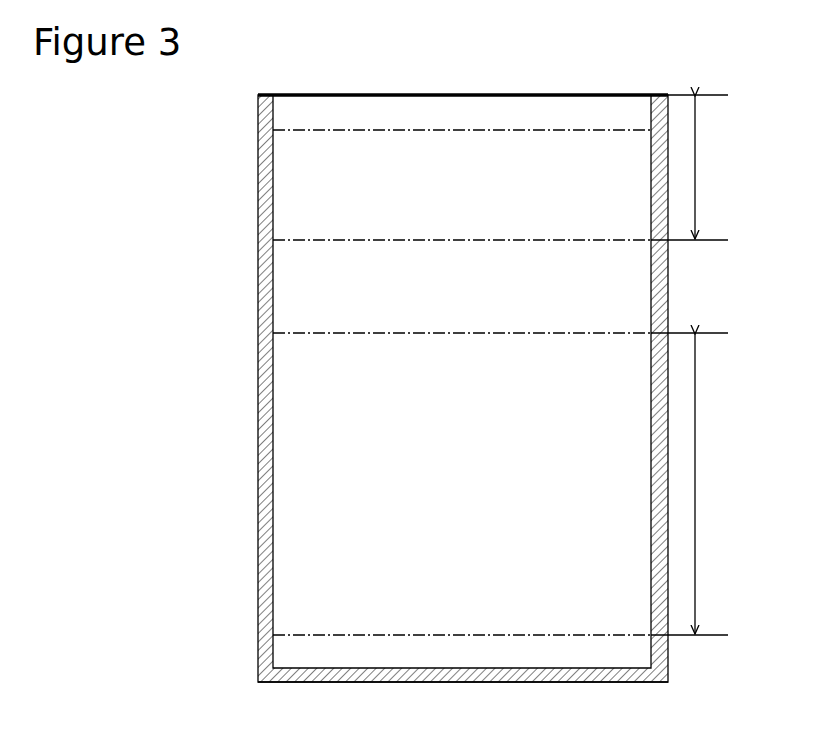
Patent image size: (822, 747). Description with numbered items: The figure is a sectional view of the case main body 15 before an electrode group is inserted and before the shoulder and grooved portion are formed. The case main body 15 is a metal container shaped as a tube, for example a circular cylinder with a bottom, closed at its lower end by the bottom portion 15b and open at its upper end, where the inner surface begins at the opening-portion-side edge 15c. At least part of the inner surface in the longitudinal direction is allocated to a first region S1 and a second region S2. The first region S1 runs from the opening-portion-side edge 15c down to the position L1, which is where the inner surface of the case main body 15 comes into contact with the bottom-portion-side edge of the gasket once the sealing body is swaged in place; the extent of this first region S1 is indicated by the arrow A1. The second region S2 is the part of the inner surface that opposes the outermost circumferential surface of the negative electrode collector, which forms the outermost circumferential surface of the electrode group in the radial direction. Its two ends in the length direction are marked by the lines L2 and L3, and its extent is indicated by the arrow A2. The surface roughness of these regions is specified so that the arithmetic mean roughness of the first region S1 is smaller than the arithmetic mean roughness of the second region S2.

The case main body 15 is at (683, 78).
The opening-portion-side edge 15c is at (562, 94).
The bottom portion 15b is at (500, 683).
The gasket contact position L1 is at (470, 238).
The first end of second region L2 is at (472, 331).
The second end of second region L3 is at (441, 632).
The first region S1 is at (448, 168).
The second region S2 is at (604, 432).
The arrow indicating first region A1 is at (698, 172).
The arrow indicating second region A2 is at (698, 513).